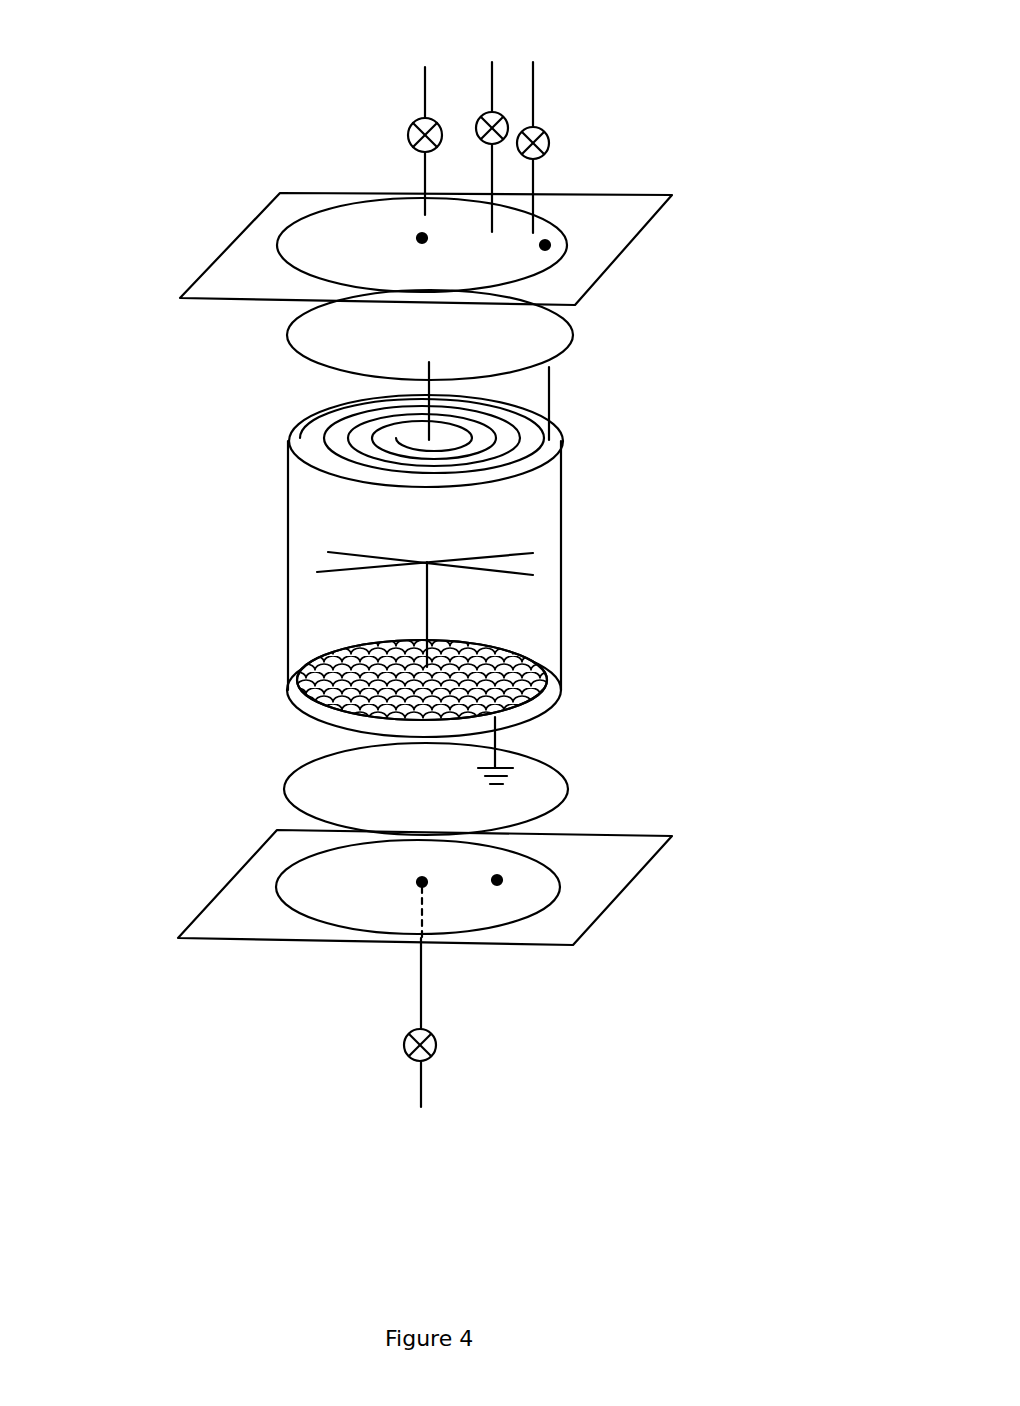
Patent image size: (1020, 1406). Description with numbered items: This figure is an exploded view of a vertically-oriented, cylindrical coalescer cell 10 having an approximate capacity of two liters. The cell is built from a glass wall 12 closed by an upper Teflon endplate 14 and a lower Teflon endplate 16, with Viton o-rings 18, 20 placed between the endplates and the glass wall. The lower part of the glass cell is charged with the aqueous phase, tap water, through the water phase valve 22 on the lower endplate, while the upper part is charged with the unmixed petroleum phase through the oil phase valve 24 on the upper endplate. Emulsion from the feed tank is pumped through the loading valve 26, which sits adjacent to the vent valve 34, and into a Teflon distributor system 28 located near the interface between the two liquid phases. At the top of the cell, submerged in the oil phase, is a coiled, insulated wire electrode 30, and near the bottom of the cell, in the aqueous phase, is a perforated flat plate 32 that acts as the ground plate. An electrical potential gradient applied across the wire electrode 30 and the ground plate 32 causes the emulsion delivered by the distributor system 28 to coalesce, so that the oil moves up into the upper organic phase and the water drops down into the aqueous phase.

The coalescer cell 10 is at (414, 578).
The glass wall 12 is at (568, 538).
The upper Teflon endplate 14 is at (618, 272).
The lower Teflon endplate 16 is at (598, 927).
The Viton o-ring 18 is at (580, 802).
The Viton o-ring 20 is at (578, 345).
The water phase valve 22 is at (438, 1055).
The oil phase valve 24 is at (437, 115).
The loading valve 26 is at (512, 117).
The Teflon distributor system 28 is at (543, 578).
The coiled insulated wire electrode 30 is at (546, 456).
The perforated flat plate 32 is at (553, 695).
The vent valve 34 is at (554, 143).